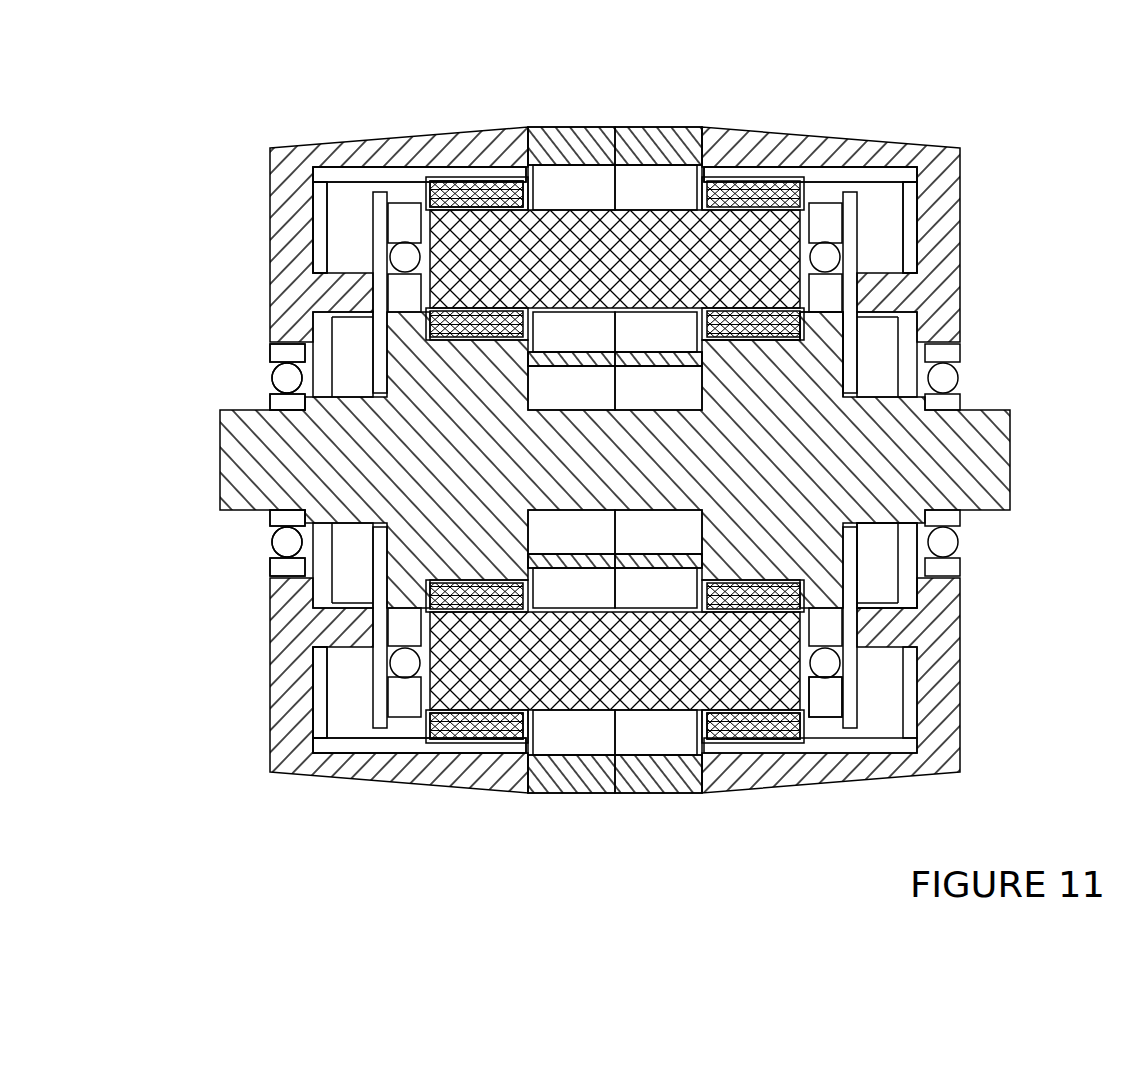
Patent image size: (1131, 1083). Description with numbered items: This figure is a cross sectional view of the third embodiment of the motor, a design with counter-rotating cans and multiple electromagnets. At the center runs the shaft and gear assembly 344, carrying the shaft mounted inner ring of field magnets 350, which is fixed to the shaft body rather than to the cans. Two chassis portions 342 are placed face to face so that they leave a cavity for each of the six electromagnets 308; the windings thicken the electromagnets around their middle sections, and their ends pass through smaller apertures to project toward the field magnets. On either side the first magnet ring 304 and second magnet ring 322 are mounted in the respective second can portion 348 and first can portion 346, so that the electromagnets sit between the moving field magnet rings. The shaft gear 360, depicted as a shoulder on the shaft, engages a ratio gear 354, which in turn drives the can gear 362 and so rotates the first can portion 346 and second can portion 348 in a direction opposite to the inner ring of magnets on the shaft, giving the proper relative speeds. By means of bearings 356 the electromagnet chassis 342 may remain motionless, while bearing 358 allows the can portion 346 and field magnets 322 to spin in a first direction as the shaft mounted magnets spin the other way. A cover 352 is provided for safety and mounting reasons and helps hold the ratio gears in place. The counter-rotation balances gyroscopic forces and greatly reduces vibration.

The shaft and gear assembly 344 is at (257, 467).
The cover 352 is at (288, 170).
The first can portion 346 is at (357, 185).
The shaft gear 360 is at (350, 400).
The electromagnets 308 is at (460, 182).
The chassis portions 342 is at (657, 148).
The second can portion 348 is at (828, 193).
The shaft mounted inner ring of field magnets 350 is at (790, 345).
The bearings 356 is at (282, 572).
The can gear 362 is at (340, 732).
The second magnet ring 322 is at (455, 730).
The first magnet ring 304 is at (750, 735).
The ratio gear 354 is at (883, 582).
The bearing 358 is at (830, 700).